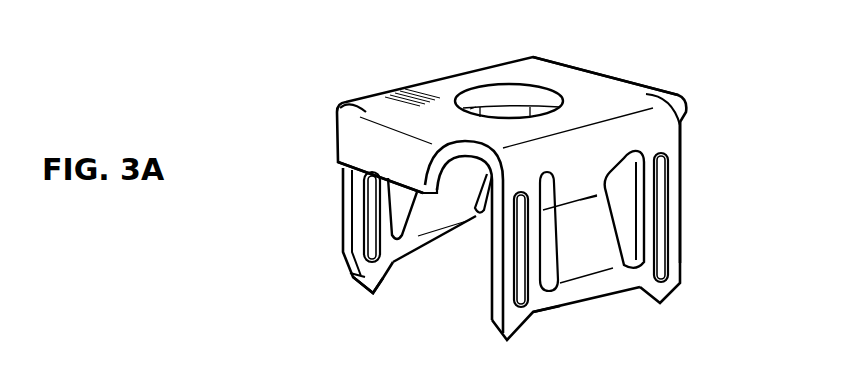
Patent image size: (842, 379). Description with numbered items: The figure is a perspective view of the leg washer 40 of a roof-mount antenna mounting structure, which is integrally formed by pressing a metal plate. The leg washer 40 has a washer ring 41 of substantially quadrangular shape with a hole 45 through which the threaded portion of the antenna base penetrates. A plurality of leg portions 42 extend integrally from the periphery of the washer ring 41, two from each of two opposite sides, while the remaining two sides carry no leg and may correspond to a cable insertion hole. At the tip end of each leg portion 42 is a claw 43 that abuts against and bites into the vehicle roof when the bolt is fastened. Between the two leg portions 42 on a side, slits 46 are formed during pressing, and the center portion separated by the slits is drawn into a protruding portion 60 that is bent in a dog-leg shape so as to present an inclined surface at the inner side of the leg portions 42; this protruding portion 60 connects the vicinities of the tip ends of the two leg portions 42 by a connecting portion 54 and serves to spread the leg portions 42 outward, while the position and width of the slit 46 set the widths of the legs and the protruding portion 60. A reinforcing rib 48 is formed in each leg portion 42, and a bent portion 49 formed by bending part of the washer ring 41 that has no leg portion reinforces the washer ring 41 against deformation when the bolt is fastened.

The leg washer 40 is at (350, 70).
The washer ring 41 is at (565, 78).
The leg portions 42 is at (356, 220).
The claw 43 is at (360, 291).
The hole 45 is at (492, 93).
The slit 46 is at (622, 222).
The reinforcing rib 48 is at (515, 294).
The bent portion 49 is at (348, 146).
The connecting portion 54 is at (556, 300).
The protruding portion 60 is at (571, 217).